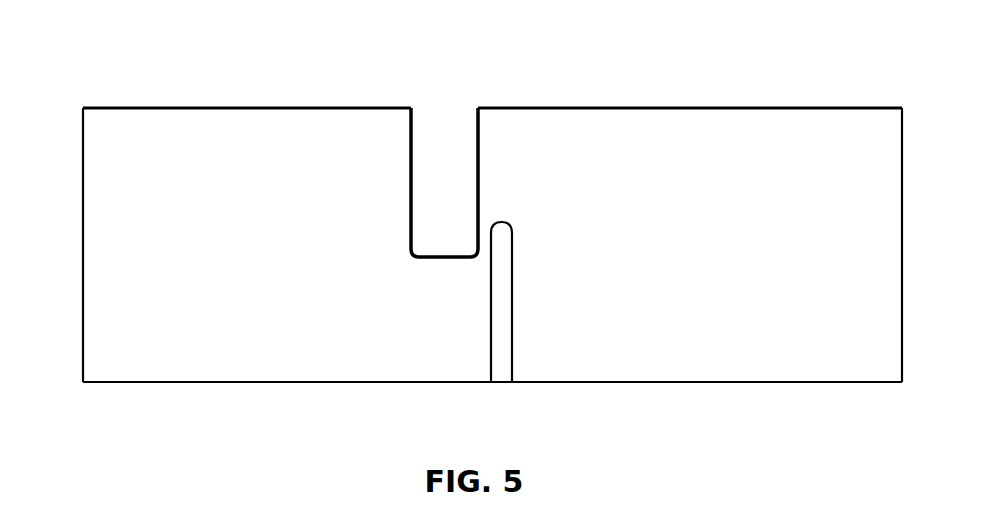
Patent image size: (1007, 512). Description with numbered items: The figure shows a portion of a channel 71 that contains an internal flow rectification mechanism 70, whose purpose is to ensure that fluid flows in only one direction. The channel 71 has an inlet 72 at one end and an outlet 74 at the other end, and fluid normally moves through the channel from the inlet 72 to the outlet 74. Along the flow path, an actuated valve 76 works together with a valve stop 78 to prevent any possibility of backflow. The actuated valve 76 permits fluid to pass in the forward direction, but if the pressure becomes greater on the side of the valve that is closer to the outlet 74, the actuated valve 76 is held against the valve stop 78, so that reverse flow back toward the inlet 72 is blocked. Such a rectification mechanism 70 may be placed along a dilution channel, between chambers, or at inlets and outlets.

The internal flow rectification mechanism 70 is at (243, 90).
The channel 71 is at (312, 360).
The inlet 72 is at (78, 244).
The outlet 74 is at (893, 250).
The actuated valve 76 is at (523, 324).
The valve stop 78 is at (481, 178).